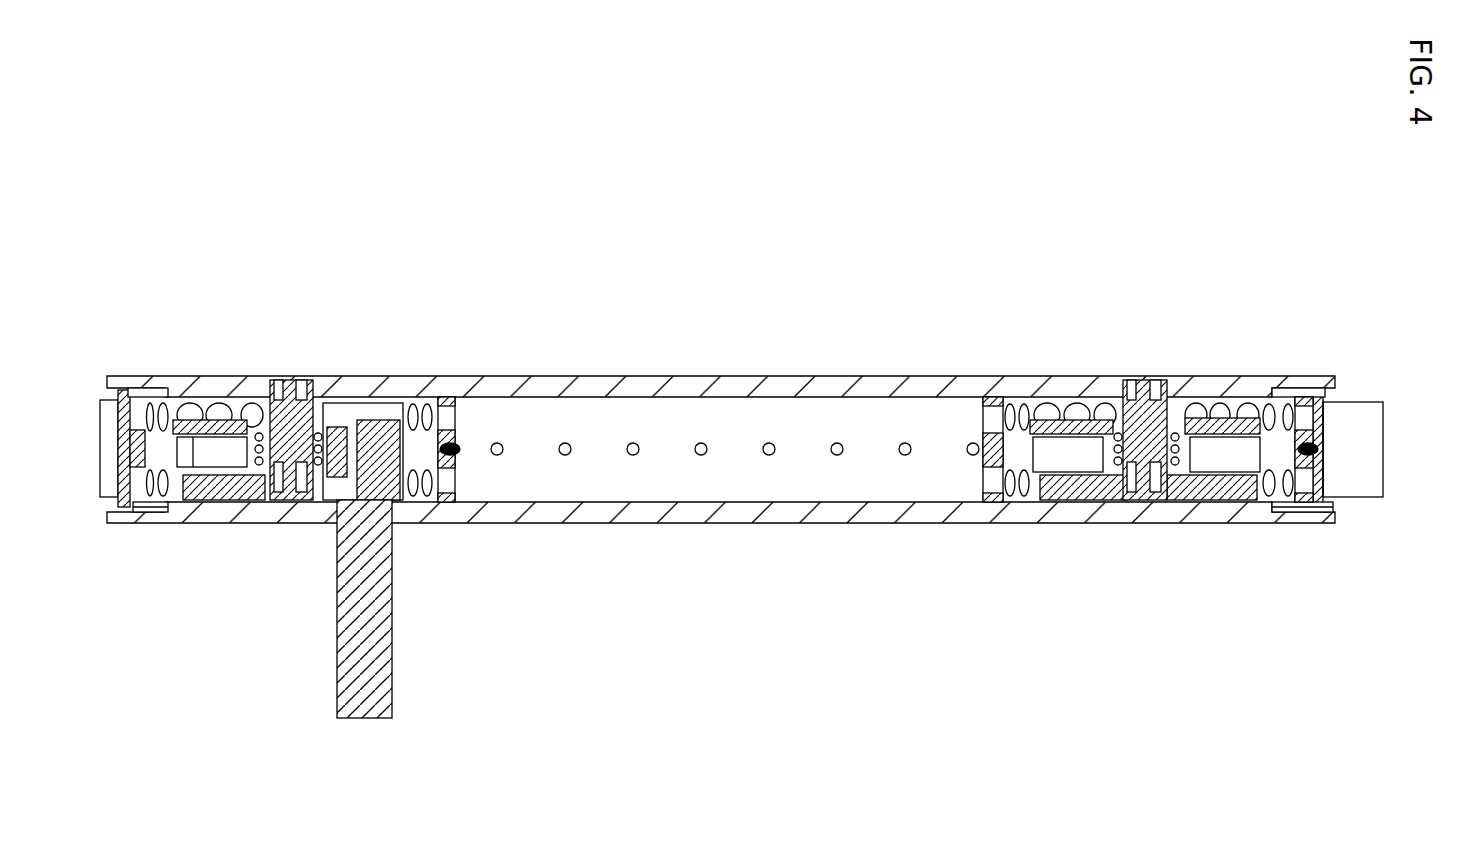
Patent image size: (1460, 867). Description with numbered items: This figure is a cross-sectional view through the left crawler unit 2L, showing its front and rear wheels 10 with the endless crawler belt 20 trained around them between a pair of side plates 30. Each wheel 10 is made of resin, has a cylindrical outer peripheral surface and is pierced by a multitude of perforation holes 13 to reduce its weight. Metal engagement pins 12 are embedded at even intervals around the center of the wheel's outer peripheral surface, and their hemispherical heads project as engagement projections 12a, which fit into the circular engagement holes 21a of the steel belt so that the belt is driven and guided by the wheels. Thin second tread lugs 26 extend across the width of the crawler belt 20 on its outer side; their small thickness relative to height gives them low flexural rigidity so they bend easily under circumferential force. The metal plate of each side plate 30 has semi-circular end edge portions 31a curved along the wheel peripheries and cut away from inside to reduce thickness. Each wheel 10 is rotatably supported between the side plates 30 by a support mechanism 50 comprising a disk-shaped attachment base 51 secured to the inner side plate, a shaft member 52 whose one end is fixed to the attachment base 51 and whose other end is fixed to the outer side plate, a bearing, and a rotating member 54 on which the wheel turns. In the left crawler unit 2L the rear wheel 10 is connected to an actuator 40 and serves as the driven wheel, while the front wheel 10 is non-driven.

The left crawler unit 2L is at (1229, 358).
The wheel 10 is at (132, 508).
The engagement pin 12 is at (447, 505).
The engagement projection 12a is at (461, 449).
The perforation hole 13 is at (366, 392).
The crawler belt 20 is at (1331, 411).
The engagement hole 21a is at (770, 456).
The second tread lug 26 is at (1355, 495).
The side plate 30 is at (742, 378).
The end edge portion 31a is at (121, 514).
The actuator 40 is at (393, 667).
The support mechanism 50 is at (233, 403).
The attachment base 51 is at (223, 501).
The shaft member 52 is at (287, 384).
The rotating member 54 is at (203, 402).